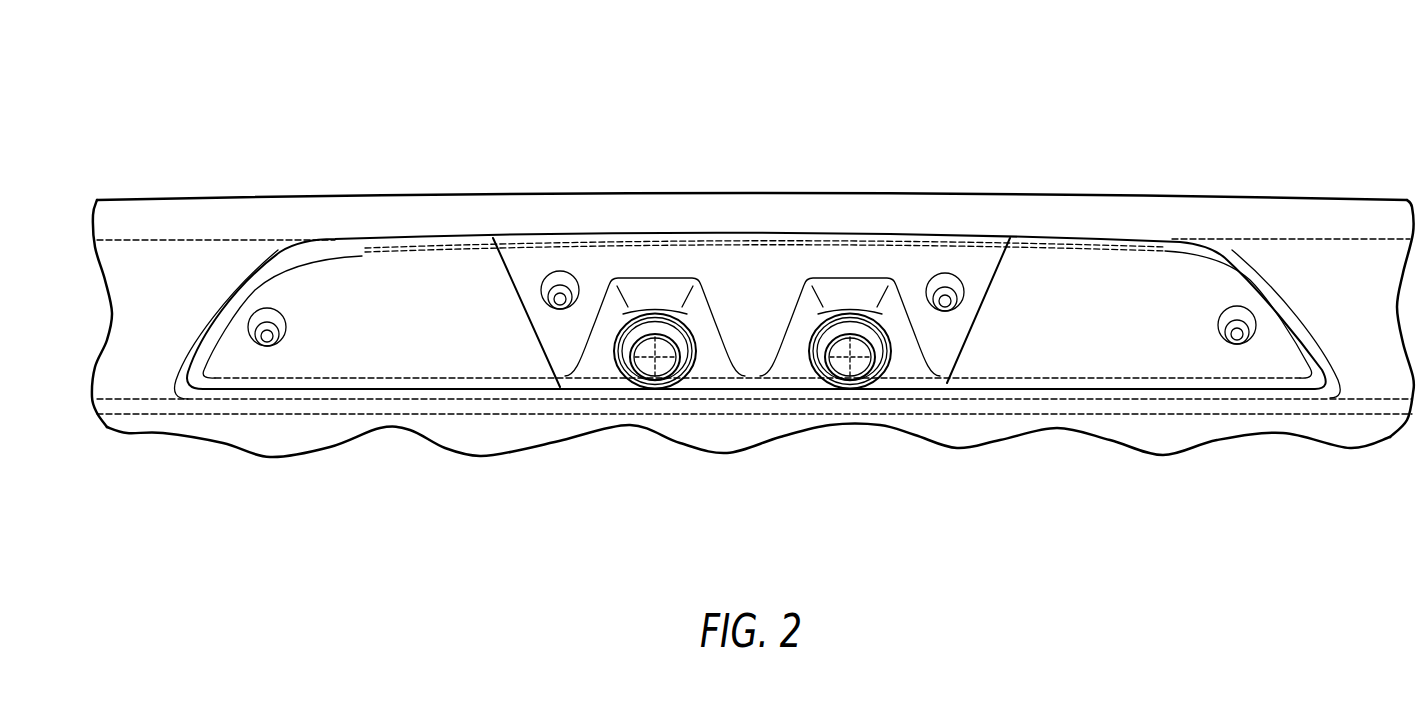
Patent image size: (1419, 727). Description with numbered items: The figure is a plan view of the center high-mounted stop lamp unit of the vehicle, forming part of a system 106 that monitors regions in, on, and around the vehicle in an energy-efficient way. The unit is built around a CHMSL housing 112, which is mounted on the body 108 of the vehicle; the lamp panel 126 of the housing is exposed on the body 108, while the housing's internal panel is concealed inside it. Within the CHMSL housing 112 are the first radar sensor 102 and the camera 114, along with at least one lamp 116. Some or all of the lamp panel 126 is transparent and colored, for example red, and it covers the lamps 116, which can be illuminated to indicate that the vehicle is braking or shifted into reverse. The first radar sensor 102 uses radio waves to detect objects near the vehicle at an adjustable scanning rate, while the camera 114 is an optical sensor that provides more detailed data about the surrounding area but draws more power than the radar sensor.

The system 106 is at (1186, 68).
The body 108 is at (1333, 213).
The center high-mounted stop lamp housing 112 is at (972, 265).
The lamp 116 is at (402, 350).
The lamp panel 126 is at (1012, 350).
The first radar sensor 102 is at (648, 367).
The camera 114 is at (857, 367).